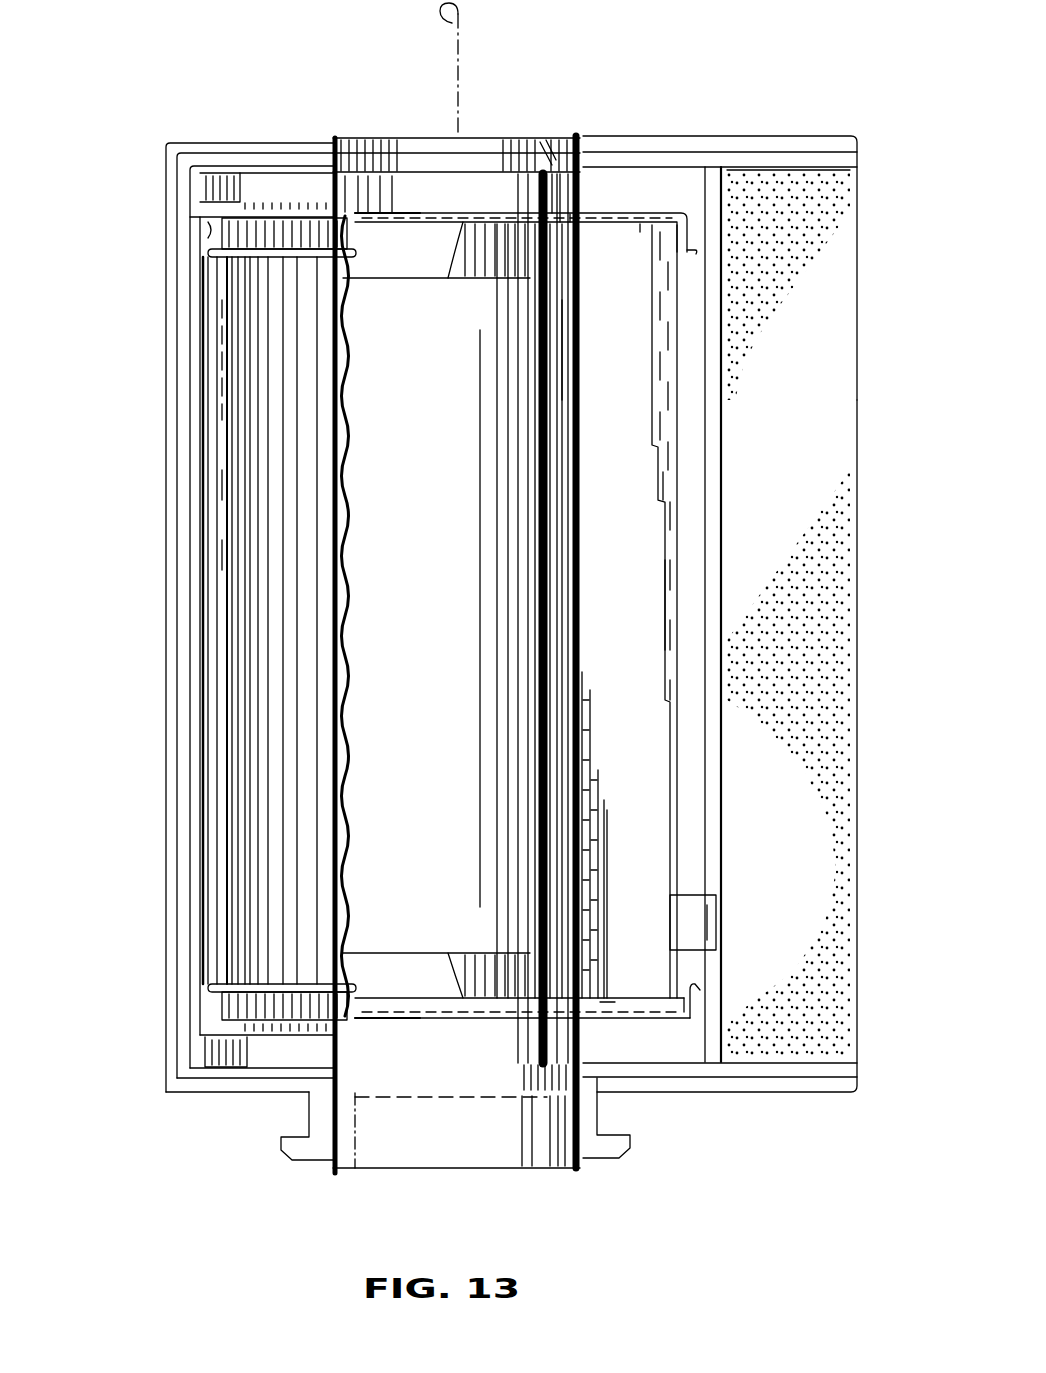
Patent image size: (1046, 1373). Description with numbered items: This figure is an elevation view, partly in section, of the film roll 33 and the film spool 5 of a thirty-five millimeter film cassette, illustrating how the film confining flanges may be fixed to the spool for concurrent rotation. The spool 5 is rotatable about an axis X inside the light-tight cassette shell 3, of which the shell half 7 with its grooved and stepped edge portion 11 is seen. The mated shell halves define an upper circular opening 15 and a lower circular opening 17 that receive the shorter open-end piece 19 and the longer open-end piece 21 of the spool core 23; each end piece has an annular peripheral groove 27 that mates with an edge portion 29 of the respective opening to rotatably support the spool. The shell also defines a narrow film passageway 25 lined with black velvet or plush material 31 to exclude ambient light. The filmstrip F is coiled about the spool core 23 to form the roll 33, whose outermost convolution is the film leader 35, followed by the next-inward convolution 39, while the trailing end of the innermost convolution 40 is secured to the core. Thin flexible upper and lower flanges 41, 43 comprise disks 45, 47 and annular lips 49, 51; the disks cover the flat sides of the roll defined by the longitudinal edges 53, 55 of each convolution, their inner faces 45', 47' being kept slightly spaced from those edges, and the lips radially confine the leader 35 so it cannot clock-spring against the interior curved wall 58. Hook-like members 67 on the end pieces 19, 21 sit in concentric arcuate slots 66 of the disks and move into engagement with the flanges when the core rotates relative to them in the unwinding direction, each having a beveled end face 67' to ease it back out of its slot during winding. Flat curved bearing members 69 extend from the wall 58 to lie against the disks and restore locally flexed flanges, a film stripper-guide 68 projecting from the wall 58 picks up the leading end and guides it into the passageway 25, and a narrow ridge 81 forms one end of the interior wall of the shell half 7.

The axis X is at (463, 12).
The shell half 7 is at (205, 142).
The cassette shell 3 is at (281, 128).
The grooved and stepped edge portion 11 is at (186, 339).
The bearing member 69 is at (216, 190).
The upper film constraining flange 41 is at (216, 237).
The lower film constraining flange 43 is at (216, 1005).
The filmstrip F is at (256, 612).
The interior curved wall 58 is at (216, 402).
The film roll 33 is at (222, 487).
The film spool 5 is at (222, 557).
The annular peripheral groove 27 is at (432, 160).
The shorter open-end piece 19 is at (361, 136).
The edge portion 29 is at (546, 160).
The longer open-end piece 21 is at (378, 1172).
The lower circular opening 17 is at (563, 1170).
The hook-like member 67 is at (436, 610).
The concentric arcuate slot 66 is at (462, 240).
The beveled end face 67' is at (426, 615).
The disk 45 is at (521, 167).
The inner face 45' is at (600, 157).
The upper circular opening 15 is at (558, 138).
The annular lip 49 is at (683, 222).
The longitudinal edge 53 is at (642, 228).
The film leader 35 is at (680, 446).
The next-inward convolution 39 is at (670, 496).
The narrow ridge 81 is at (721, 530).
The spool core 23 is at (578, 624).
The innermost convolution 40 is at (590, 720).
The film stripper-guide 68 is at (672, 916).
The disk 47 is at (522, 1069).
The inner face 47' is at (669, 1030).
The longitudinal edge 55 is at (605, 998).
The annular lip 51 is at (686, 1000).
The film passageway 25 is at (820, 350).
The plush material 31 is at (830, 212).